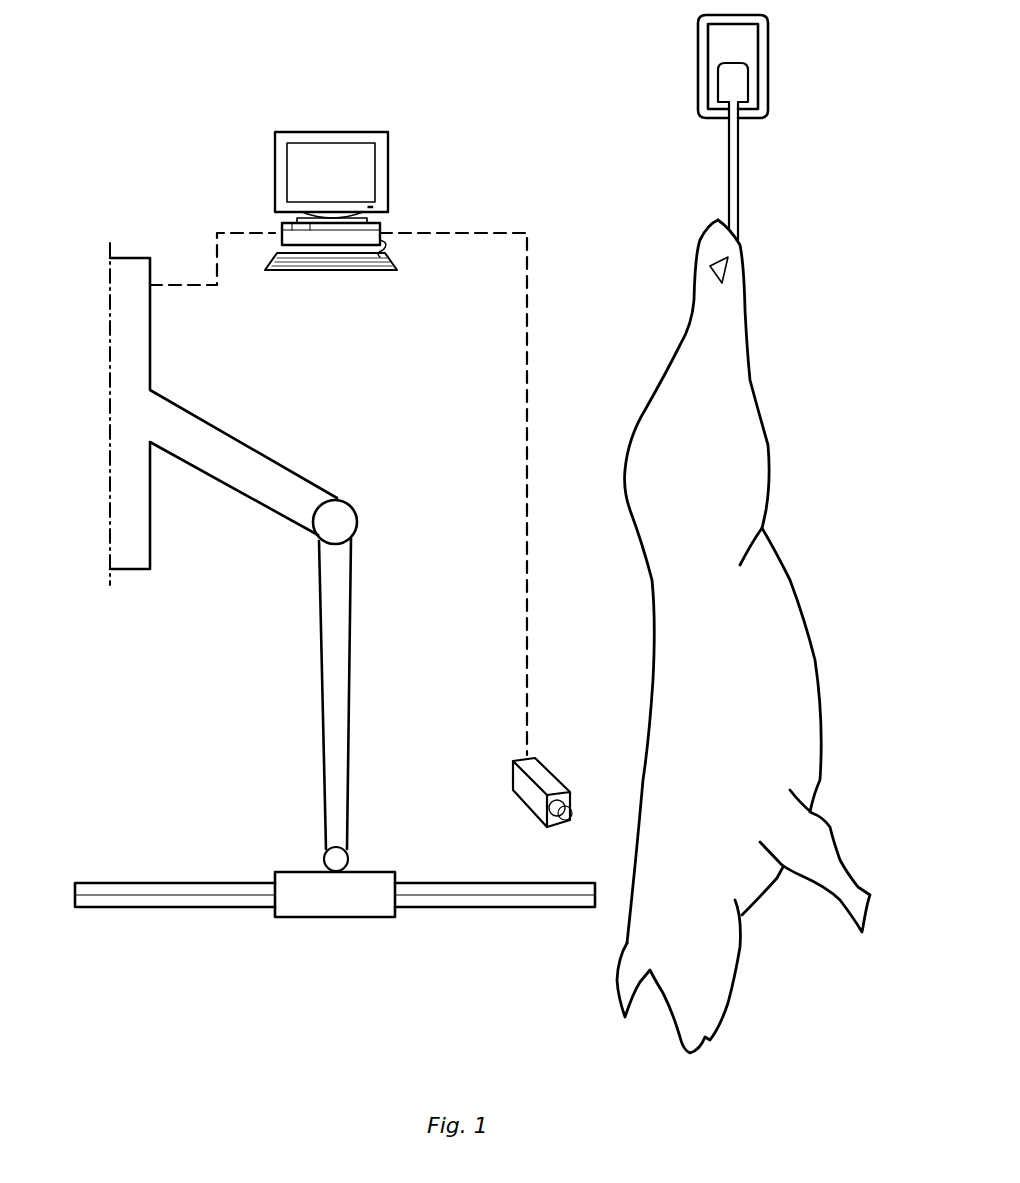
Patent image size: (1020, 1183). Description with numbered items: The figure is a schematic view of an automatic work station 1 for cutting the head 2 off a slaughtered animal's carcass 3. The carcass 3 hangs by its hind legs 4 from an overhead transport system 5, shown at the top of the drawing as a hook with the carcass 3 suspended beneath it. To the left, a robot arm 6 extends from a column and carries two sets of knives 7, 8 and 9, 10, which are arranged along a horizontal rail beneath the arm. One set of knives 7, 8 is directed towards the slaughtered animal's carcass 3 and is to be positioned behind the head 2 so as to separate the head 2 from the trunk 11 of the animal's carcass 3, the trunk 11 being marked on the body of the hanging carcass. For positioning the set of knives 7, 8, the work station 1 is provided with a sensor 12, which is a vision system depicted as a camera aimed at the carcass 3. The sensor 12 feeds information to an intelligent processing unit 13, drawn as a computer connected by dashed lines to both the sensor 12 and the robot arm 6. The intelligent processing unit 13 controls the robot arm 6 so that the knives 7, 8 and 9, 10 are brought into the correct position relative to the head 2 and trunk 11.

The automatic work station 1 is at (134, 150).
The head 2 is at (702, 980).
The slaughtered animal's carcass 3 is at (820, 612).
The hind legs 4 is at (722, 330).
The overhead transport system 5 is at (785, 65).
The robot arm 6 is at (257, 460).
The knife 7 is at (478, 890).
The knife 8 is at (515, 900).
The knife 9 is at (165, 890).
The knife 10 is at (143, 900).
The trunk 11 is at (746, 726).
The sensor 12 is at (548, 777).
The intelligent processing unit 13 is at (353, 171).